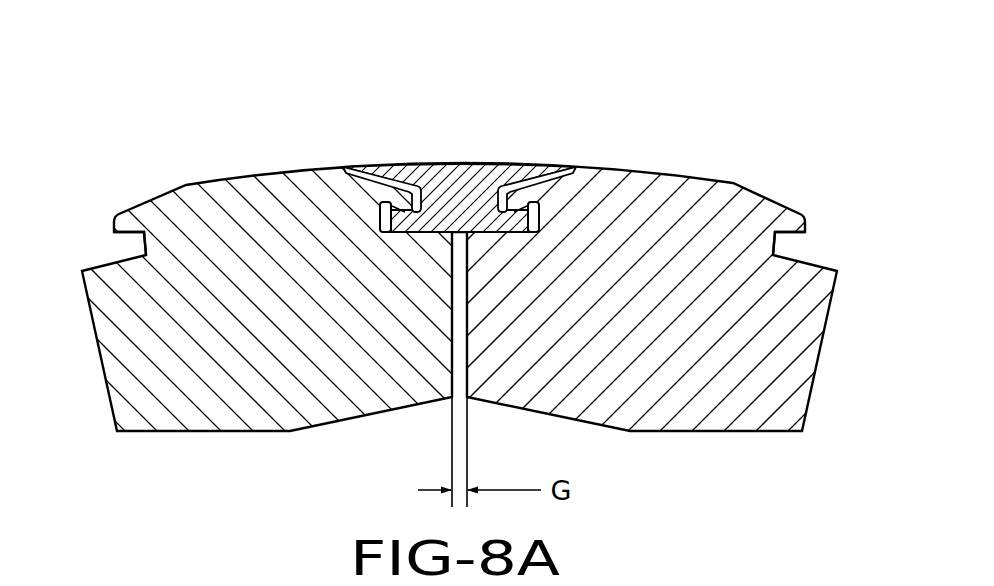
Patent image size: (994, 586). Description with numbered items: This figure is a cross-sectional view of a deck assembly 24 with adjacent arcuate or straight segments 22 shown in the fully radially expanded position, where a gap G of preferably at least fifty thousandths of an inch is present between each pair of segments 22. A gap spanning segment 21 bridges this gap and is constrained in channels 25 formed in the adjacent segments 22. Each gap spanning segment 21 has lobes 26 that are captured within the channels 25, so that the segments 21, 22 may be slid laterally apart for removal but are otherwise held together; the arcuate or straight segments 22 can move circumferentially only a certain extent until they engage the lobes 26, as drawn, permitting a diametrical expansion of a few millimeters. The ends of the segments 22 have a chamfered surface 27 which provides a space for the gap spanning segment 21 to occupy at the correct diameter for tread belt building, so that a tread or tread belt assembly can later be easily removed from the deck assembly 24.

The gap spanning segment 21 is at (456, 182).
The arcuate or straight segments 22 is at (158, 352).
The deck assembly 24 is at (190, 161).
The channels 25 is at (140, 236).
The lobes 26 is at (383, 228).
The chamfered surface 27 is at (368, 178).